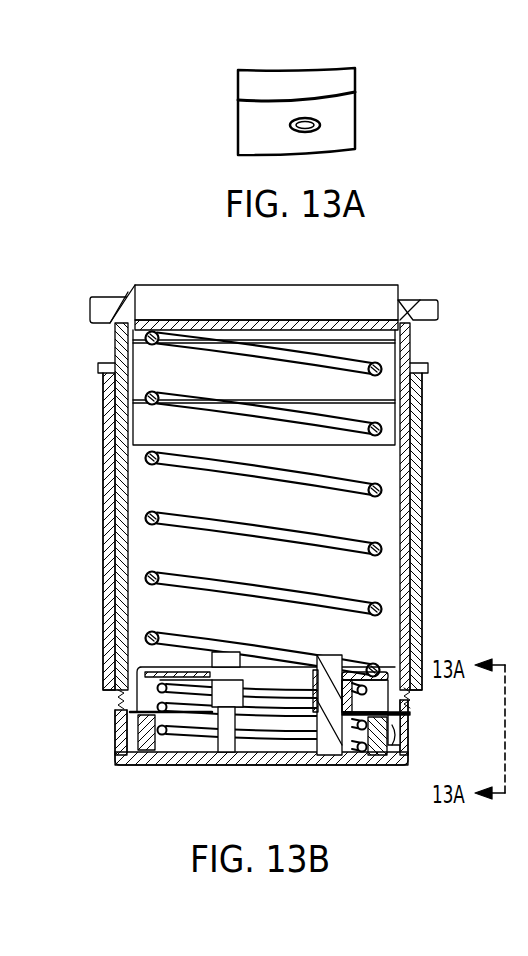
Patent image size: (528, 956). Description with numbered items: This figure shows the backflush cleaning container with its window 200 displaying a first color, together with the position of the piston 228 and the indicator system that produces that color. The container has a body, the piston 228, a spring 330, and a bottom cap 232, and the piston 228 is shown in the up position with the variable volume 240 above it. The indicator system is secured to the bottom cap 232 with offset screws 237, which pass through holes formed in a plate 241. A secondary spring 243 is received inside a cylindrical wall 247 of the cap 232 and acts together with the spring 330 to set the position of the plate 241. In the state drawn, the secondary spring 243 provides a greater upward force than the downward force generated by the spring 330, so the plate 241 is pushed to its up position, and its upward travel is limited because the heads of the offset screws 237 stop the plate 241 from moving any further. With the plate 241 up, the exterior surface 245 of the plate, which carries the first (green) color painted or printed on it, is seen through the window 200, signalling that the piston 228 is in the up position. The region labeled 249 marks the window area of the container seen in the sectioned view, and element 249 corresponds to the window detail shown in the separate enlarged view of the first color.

In FIG. 13A, the window 200 is at (345, 122).
In FIG. 13B, the window 200 is at (408, 728).
In FIG. 13B, the piston 228 is at (405, 355).
In FIG. 13B, the bottom cap 232 is at (100, 690).
In FIG. 13B, the offset screws 237 is at (343, 655).
In FIG. 13B, the variable volume 240 is at (170, 305).
In FIG. 13B, the plate 241 is at (130, 658).
In FIG. 13B, the secondary spring 243 is at (250, 766).
In FIG. 13B, the exterior surface 245 is at (407, 704).
In FIG. 13B, the cylindrical wall 247 is at (373, 748).
In FIG. 13A, the slot 249 is at (306, 120).
In FIG. 13B, the slot 249 is at (391, 746).
In FIG. 13B, the spring 330 is at (340, 532).